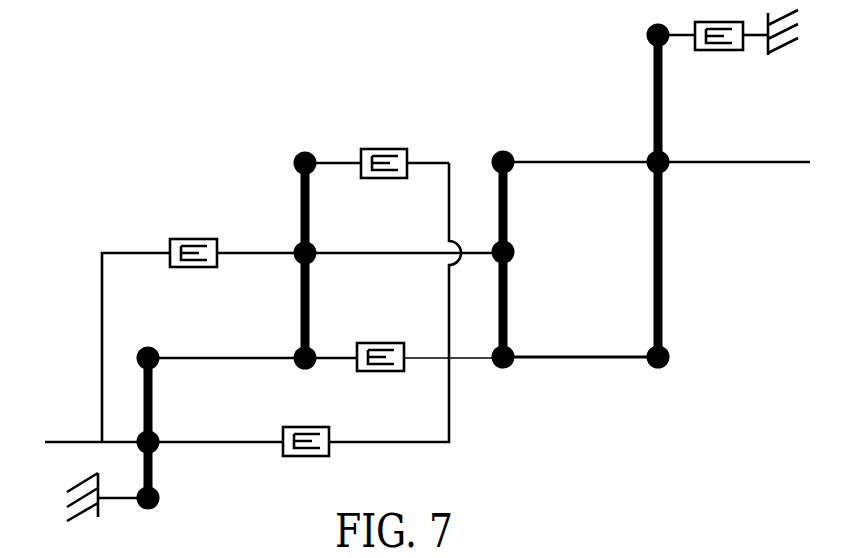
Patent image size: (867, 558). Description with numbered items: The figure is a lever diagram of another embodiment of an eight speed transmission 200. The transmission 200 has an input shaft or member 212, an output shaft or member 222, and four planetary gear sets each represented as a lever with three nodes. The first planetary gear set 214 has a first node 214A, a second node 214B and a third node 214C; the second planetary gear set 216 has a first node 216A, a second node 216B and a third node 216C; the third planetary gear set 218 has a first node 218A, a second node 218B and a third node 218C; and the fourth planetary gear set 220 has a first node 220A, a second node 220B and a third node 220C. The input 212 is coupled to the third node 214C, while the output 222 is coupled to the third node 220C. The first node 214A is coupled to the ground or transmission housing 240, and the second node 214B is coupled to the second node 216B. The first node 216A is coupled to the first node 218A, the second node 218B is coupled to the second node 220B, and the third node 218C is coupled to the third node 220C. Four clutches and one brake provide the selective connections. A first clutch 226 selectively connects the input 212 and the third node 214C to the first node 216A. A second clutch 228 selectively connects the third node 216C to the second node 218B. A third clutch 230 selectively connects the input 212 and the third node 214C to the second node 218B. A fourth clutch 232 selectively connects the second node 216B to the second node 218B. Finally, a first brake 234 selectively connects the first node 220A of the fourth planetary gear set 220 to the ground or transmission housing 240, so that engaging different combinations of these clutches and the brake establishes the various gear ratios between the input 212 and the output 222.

The transmission 200 is at (740, 139).
The input shaft or member 212 is at (68, 440).
The first planetary gear set 214 is at (168, 508).
The first node 214A is at (160, 497).
The second node 214B is at (151, 349).
The third node 214C is at (153, 435).
The second planetary gear set 216 is at (292, 232).
The first node 216A is at (312, 250).
The second node 216B is at (297, 353).
The third node 216C is at (296, 157).
The third planetary gear set 218 is at (498, 388).
The first node 218A is at (512, 258).
The second node 218B is at (512, 364).
The third node 218C is at (512, 167).
The fourth planetary gear set 220 is at (646, 390).
The first node 220A is at (648, 40).
The second node 220B is at (668, 360).
The third node 220C is at (664, 168).
The output shaft or member 222 is at (785, 165).
The first clutch 226 is at (193, 238).
The second clutch 228 is at (378, 148).
The third clutch 230 is at (308, 426).
The fourth clutch 232 is at (381, 342).
The first brake 234 is at (706, 51).
The ground or transmission housing 240 is at (78, 479).